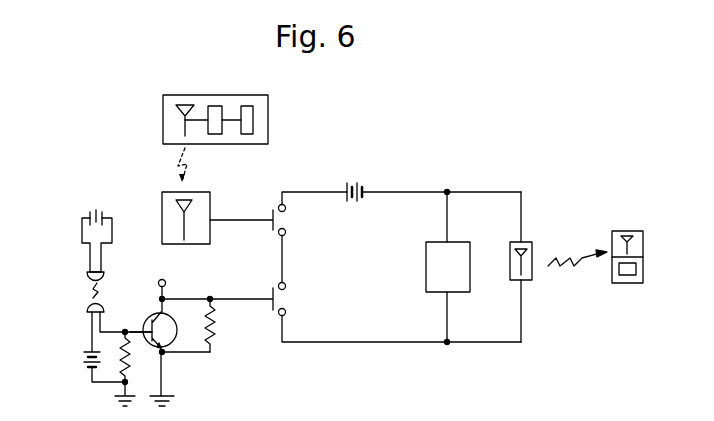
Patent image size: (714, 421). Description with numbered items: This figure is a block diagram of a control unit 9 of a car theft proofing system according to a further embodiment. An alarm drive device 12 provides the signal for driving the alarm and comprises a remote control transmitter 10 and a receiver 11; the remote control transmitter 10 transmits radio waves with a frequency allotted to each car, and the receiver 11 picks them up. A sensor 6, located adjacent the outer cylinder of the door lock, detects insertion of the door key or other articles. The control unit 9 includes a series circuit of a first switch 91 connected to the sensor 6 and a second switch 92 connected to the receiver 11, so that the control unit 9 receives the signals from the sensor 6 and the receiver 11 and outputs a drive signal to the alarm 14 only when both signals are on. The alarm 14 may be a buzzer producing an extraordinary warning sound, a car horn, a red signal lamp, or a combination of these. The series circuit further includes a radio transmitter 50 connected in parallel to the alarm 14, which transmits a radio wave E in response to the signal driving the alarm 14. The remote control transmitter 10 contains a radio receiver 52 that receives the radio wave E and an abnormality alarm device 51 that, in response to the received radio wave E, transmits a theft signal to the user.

The sensor 6 is at (84, 290).
The control unit 9 is at (320, 294).
The remote control transmitter 10 is at (268, 121).
The receiver 11 is at (210, 200).
The alarm drive device 12 is at (256, 169).
The alarm 14 is at (426, 280).
The radio transmitter 50 is at (533, 240).
The abnormality alarm device 51 is at (642, 261).
The radio receiver 52 is at (640, 245).
The first switch 91 is at (288, 304).
The second switch 92 is at (288, 221).
The radio wave E is at (576, 248).